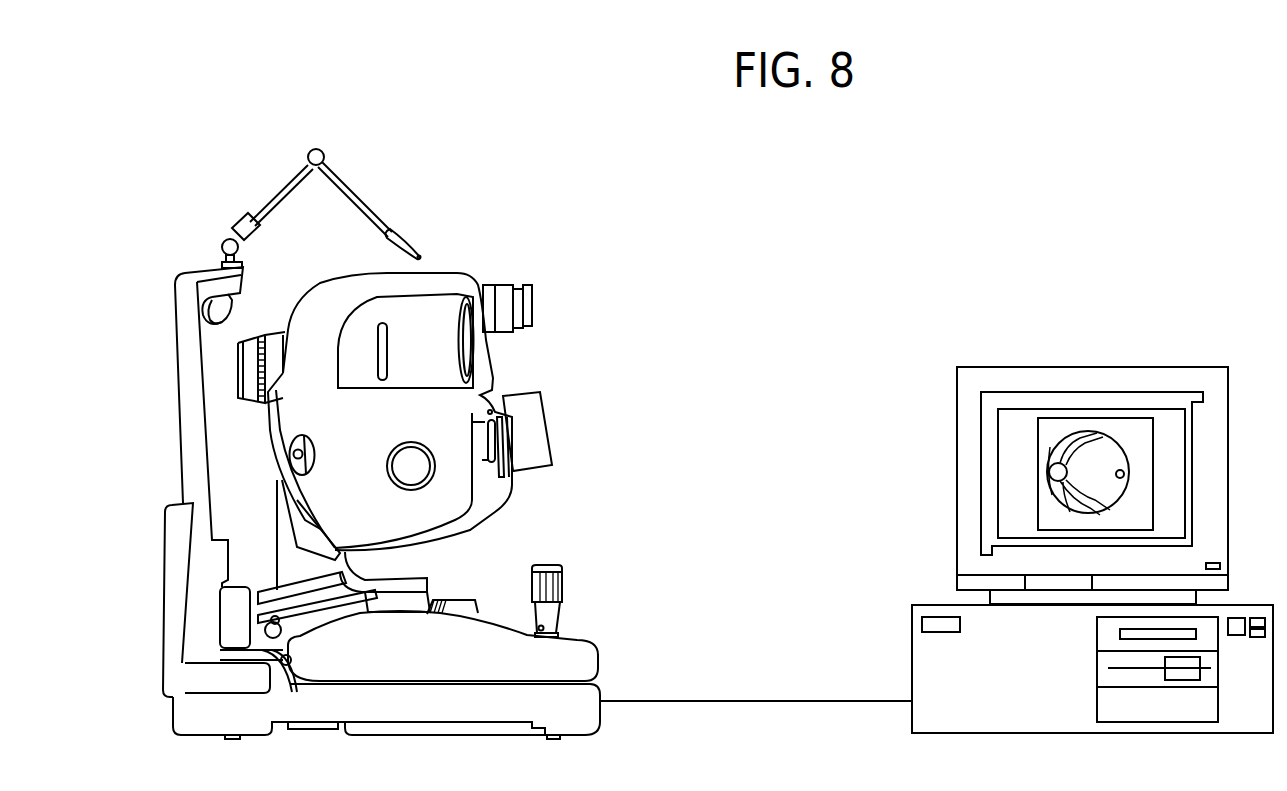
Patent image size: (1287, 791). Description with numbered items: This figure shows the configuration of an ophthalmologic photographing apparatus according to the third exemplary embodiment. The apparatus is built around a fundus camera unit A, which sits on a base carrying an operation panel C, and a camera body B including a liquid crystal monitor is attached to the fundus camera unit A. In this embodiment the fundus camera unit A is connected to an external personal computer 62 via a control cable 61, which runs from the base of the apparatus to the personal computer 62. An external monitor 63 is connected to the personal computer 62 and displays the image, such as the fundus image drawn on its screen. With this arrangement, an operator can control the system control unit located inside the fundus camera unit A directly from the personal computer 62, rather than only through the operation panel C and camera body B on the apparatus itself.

The fundus camera unit A is at (453, 272).
The camera body B is at (553, 419).
The operation panel C is at (500, 625).
The control cable 61 is at (757, 701).
The personal computer 62 is at (1256, 605).
The external monitor 63 is at (1136, 367).